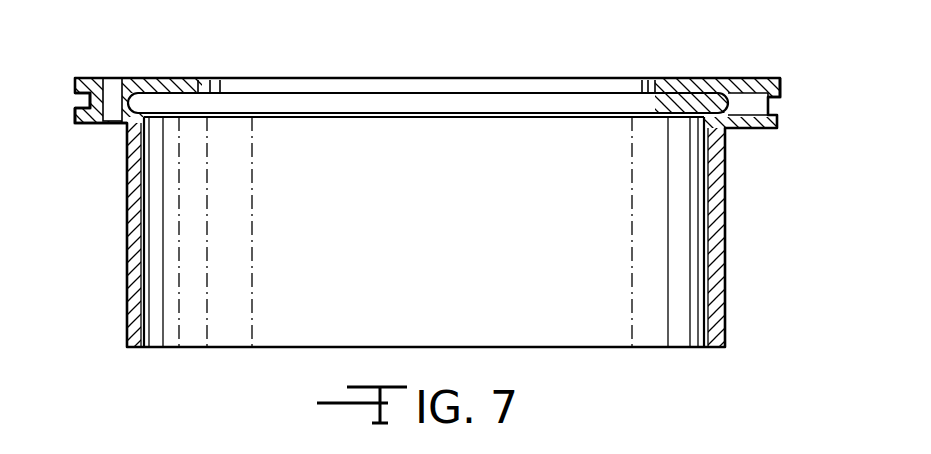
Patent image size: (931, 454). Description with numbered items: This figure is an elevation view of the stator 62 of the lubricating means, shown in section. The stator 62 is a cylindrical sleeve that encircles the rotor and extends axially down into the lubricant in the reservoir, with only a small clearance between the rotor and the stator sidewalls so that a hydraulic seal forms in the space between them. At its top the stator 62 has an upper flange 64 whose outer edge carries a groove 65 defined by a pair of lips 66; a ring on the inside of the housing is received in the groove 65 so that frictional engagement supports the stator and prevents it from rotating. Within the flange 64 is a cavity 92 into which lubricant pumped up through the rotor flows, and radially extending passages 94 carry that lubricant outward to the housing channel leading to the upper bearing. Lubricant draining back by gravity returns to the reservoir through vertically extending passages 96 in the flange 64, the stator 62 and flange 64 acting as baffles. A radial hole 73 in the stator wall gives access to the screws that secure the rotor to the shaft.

The stator 62 is at (723, 300).
The upper flange 64 is at (756, 128).
The groove 65 is at (88, 102).
The lips 66 is at (78, 122).
The radial hole 73 is at (155, 148).
The cavity 92 is at (443, 102).
The radially extending passages 94 is at (747, 108).
The vertically extending passages 96 is at (110, 88).